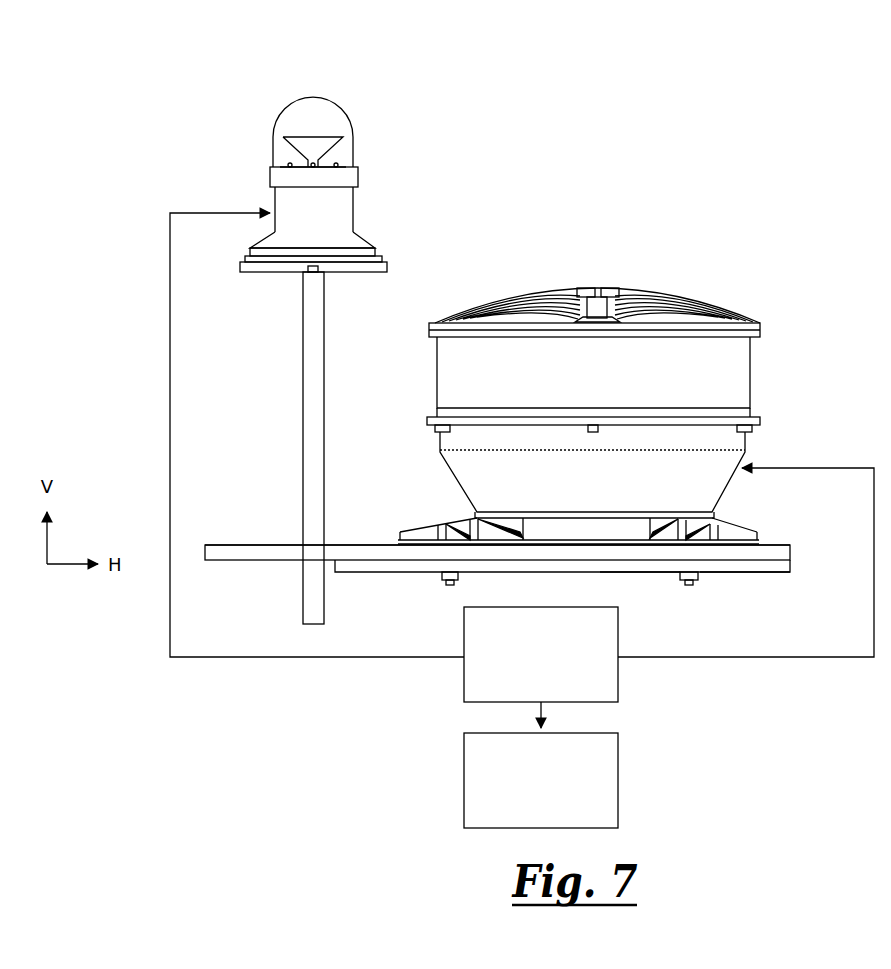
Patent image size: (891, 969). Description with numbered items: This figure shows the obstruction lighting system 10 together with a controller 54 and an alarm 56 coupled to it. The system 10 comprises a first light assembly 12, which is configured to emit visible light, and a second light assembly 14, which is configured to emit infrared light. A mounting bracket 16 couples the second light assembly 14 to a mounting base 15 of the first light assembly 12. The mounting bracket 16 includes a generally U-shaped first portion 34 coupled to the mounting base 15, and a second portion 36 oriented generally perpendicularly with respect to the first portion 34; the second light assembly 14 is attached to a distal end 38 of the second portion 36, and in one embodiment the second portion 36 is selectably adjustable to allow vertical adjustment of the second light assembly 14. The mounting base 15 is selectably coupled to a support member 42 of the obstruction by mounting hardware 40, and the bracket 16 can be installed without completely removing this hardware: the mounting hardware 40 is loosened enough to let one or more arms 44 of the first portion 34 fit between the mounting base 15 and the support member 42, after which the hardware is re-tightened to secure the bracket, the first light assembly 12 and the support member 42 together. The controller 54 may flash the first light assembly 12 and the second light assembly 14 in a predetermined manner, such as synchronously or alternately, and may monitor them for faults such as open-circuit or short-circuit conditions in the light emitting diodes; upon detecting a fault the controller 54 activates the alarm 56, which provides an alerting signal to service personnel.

The obstruction lighting system 10 is at (579, 354).
The first light assembly 12 is at (490, 302).
The second light assembly 14 is at (314, 96).
The mounting base 15 is at (790, 544).
The mounting bracket 16 is at (375, 575).
The first portion 34 is at (796, 556).
The second portion 36 is at (303, 395).
The distal end 38 is at (325, 276).
The mounting hardware 40 is at (450, 586).
The support member 42 is at (776, 573).
The arm 44 is at (643, 573).
The controller 54 is at (620, 680).
The alarm 56 is at (464, 780).